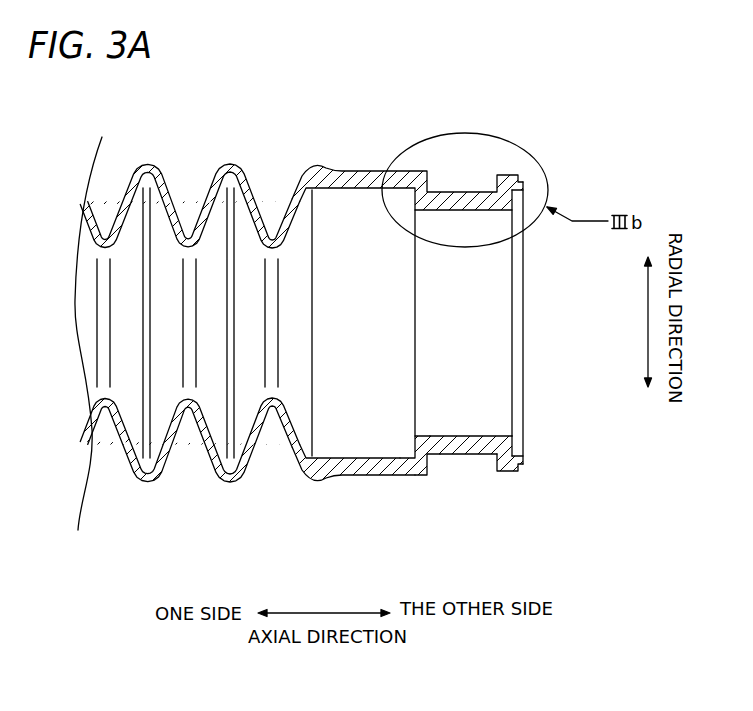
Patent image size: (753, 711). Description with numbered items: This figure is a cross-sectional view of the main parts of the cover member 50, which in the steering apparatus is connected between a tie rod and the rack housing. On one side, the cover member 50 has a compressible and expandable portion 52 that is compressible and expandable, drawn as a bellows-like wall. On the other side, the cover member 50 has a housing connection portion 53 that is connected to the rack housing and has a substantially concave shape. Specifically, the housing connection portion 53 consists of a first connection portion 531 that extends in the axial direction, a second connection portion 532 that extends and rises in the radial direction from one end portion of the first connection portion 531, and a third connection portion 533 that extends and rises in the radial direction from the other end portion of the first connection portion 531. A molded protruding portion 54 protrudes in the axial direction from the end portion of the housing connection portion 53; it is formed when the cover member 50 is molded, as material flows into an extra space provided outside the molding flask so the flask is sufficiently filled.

The cover member 50 is at (376, 308).
The compressible and expandable portion 52 is at (178, 475).
The housing connection portion 53 is at (417, 341).
The first connection portion 531 is at (467, 453).
The second connection portion 532 is at (415, 478).
The third connection portion 533 is at (505, 470).
The molded protruding portion 54 is at (525, 463).